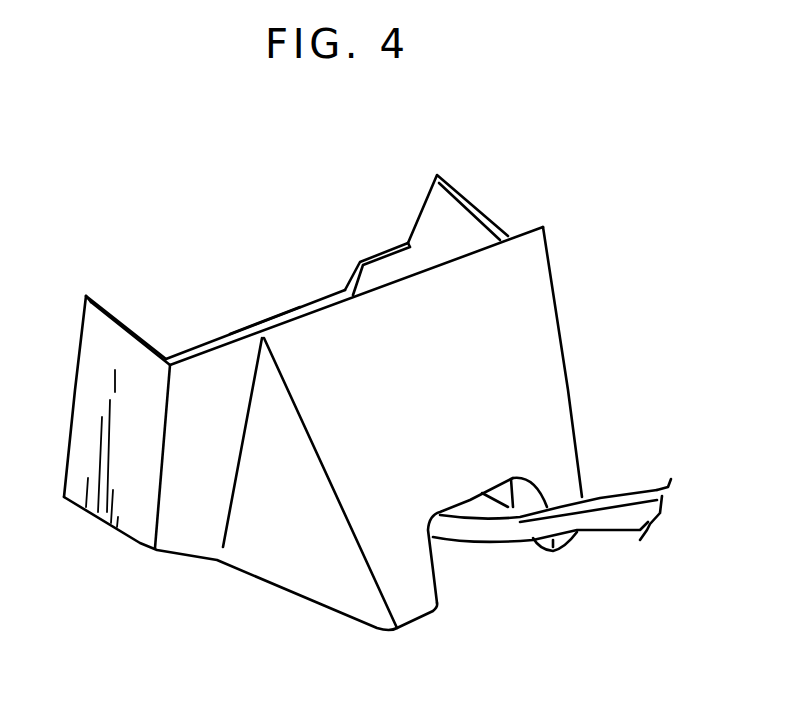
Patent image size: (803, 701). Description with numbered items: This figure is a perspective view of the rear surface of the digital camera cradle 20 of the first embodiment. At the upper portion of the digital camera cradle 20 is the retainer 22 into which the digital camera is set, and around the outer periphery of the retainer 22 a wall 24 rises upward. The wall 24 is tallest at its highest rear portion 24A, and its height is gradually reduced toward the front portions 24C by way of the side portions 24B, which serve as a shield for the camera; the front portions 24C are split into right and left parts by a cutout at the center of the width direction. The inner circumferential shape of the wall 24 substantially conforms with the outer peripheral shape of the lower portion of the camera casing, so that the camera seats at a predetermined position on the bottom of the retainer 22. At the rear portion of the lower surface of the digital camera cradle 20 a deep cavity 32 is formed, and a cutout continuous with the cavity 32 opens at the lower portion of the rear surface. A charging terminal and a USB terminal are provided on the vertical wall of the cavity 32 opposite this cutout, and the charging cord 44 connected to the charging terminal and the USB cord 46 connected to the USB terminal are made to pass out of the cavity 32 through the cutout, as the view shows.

The digital camera cradle 20 is at (568, 358).
The retainer 22 is at (318, 300).
The wall 24 is at (488, 208).
The highest rear portion 24A is at (302, 311).
The side portions 24B is at (103, 343).
The front portions 24C is at (383, 265).
The cavity 32 is at (431, 568).
The charging cord 44 is at (608, 517).
The USB cord 46 is at (607, 492).